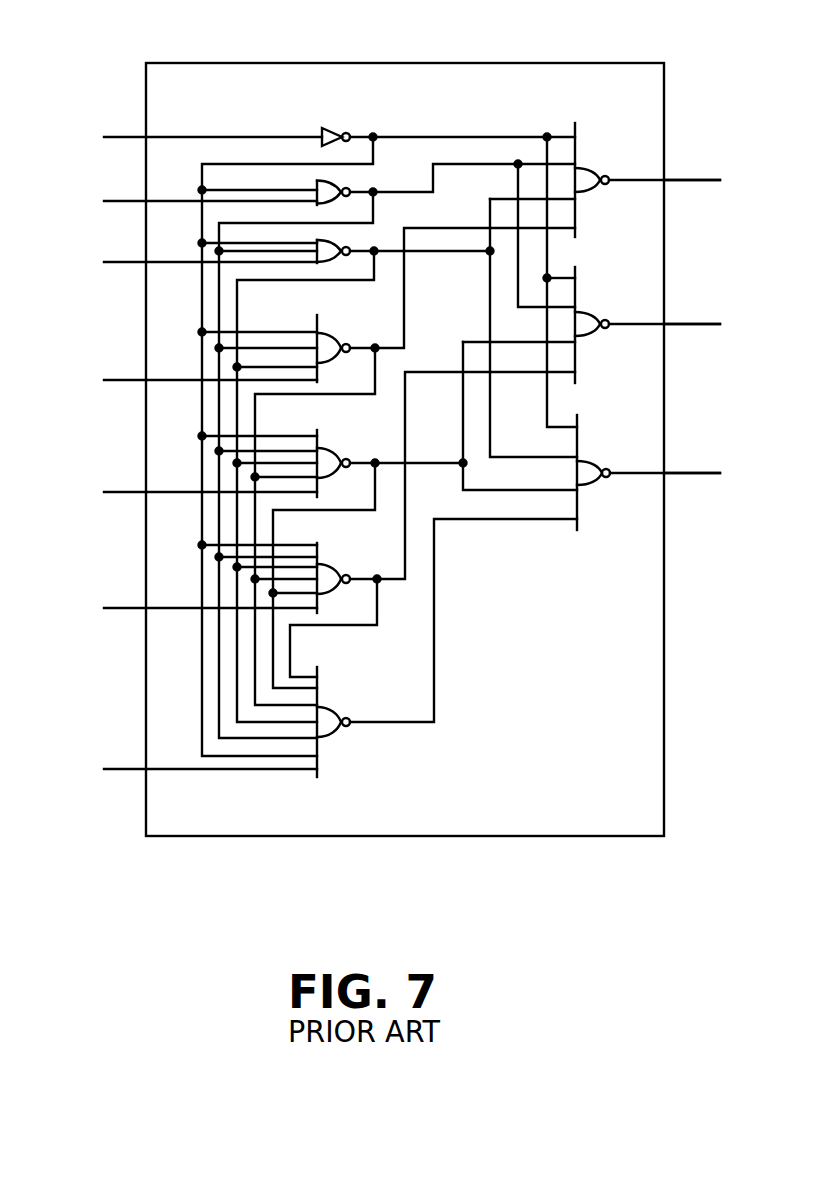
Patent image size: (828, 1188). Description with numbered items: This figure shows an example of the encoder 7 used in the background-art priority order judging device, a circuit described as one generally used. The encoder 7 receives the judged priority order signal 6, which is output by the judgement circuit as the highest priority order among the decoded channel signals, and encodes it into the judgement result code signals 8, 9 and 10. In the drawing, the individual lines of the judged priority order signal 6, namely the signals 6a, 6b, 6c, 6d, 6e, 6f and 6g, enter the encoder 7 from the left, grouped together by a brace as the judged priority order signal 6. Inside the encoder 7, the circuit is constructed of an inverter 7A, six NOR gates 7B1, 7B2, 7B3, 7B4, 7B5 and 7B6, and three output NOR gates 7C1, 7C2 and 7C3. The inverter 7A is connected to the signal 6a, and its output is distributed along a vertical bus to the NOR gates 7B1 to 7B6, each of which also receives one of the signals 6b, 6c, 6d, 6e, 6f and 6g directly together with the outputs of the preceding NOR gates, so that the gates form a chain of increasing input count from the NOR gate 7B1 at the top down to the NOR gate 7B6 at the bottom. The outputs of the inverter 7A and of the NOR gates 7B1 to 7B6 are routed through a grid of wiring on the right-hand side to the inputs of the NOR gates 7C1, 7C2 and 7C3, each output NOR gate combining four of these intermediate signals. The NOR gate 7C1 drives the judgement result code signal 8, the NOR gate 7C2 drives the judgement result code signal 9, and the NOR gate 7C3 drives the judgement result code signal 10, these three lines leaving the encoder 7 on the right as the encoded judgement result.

The judged priority order signal 6 is at (70, 130).
The judged priority order signal 6a is at (108, 136).
The judged priority order signal 6b is at (114, 189).
The judged priority order signal 6c is at (114, 254).
The judged priority order signal 6d is at (108, 379).
The judged priority order signal 6e is at (108, 491).
The judged priority order signal 6f is at (108, 607).
The judged priority order signal 6g is at (108, 768).
The encoder 7 is at (305, 58).
The inverter 7A is at (333, 127).
The NOR gate 7B1 is at (346, 181).
The NOR gate 7B2 is at (346, 241).
The NOR gate 7B3 is at (331, 337).
The NOR gate 7B4 is at (331, 453).
The NOR gate 7B5 is at (332, 565).
The NOR gate 7B6 is at (332, 708).
The NOR gate 7C1 is at (588, 169).
The NOR gate 7C2 is at (588, 315).
The NOR gate 7C3 is at (589, 461).
The judgement result code signal 8 is at (690, 178).
The judgement result code signal 9 is at (694, 322).
The judgement result code signal 10 is at (694, 470).